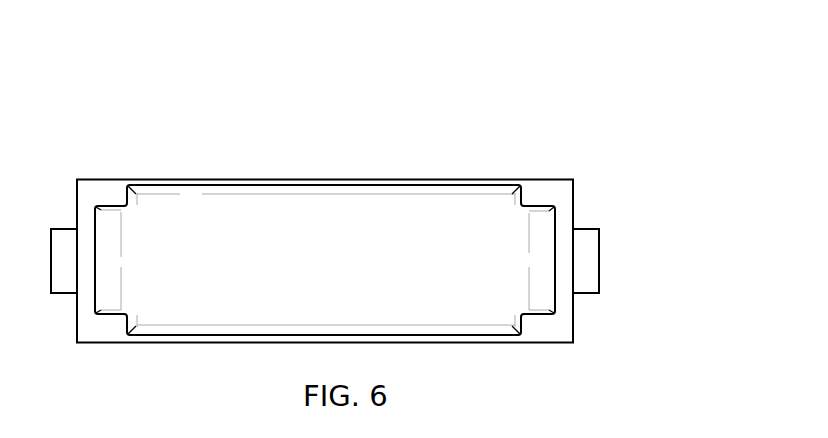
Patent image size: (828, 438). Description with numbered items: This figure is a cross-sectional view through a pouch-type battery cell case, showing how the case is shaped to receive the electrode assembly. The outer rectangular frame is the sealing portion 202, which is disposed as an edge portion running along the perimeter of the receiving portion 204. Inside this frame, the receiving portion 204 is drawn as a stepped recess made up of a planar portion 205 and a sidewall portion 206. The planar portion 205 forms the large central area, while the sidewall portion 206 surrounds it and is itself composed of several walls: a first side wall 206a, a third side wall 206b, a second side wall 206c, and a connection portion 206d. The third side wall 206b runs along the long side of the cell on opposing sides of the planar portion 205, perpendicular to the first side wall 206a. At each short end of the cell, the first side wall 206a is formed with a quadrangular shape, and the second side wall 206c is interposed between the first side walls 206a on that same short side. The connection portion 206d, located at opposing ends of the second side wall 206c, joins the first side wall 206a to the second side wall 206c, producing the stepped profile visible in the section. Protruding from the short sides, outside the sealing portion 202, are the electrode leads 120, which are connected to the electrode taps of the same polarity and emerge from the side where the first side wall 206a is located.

The electrode lead 120 is at (593, 245).
The sealing portion 202 is at (567, 327).
The receiving portion 204 is at (359, 183).
The planar portion 205 is at (356, 215).
The sidewall portion 206 is at (359, 191).
The first side wall 206a is at (535, 193).
The third side wall 206b is at (453, 188).
The second side wall 206c is at (585, 174).
The connection portion 206d is at (530, 208).